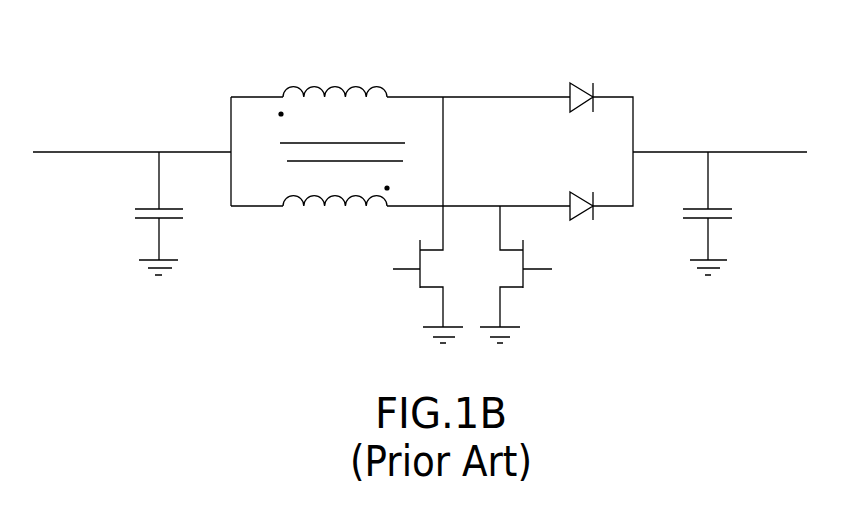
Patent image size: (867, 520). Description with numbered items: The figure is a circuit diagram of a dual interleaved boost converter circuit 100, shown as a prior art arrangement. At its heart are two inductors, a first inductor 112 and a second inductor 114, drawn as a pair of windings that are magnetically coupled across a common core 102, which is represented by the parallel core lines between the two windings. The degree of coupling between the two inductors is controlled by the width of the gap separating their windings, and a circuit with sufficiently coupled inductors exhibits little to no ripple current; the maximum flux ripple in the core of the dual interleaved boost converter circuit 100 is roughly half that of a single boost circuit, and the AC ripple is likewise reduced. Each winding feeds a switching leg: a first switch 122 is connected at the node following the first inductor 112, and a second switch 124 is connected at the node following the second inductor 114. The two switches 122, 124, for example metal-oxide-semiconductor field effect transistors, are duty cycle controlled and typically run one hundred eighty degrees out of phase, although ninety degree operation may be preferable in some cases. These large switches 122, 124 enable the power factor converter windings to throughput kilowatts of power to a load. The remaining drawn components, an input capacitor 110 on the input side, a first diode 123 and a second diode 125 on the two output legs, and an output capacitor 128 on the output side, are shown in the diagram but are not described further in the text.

The dual interleaved boost converter circuit 100 is at (726, 54).
The common core 102 is at (408, 148).
The input capacitor 110 is at (175, 217).
The inductor L1 112 is at (375, 90).
The inductor L2 114 is at (290, 197).
The switch Q1 122 is at (420, 297).
The first diode 123 is at (585, 83).
The switch Q2 124 is at (523, 297).
The second diode 125 is at (585, 192).
The output capacitor 128 is at (722, 217).